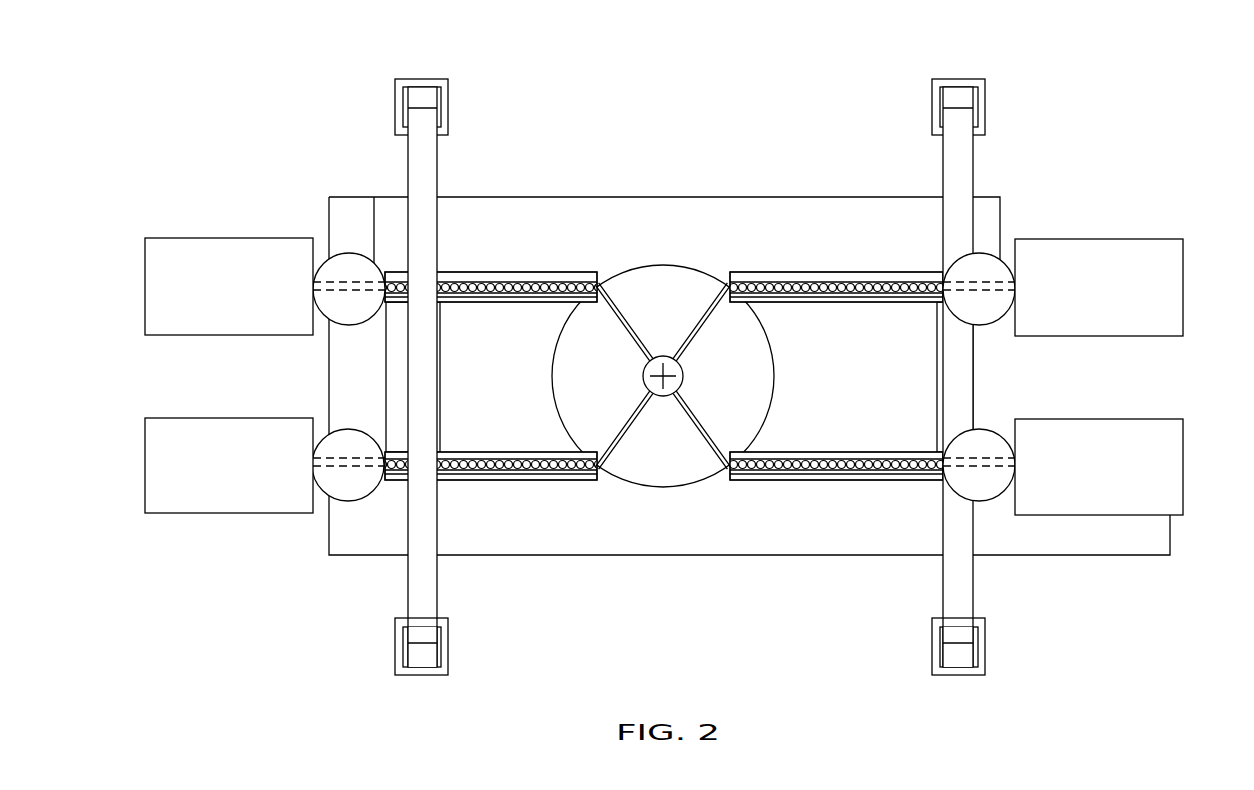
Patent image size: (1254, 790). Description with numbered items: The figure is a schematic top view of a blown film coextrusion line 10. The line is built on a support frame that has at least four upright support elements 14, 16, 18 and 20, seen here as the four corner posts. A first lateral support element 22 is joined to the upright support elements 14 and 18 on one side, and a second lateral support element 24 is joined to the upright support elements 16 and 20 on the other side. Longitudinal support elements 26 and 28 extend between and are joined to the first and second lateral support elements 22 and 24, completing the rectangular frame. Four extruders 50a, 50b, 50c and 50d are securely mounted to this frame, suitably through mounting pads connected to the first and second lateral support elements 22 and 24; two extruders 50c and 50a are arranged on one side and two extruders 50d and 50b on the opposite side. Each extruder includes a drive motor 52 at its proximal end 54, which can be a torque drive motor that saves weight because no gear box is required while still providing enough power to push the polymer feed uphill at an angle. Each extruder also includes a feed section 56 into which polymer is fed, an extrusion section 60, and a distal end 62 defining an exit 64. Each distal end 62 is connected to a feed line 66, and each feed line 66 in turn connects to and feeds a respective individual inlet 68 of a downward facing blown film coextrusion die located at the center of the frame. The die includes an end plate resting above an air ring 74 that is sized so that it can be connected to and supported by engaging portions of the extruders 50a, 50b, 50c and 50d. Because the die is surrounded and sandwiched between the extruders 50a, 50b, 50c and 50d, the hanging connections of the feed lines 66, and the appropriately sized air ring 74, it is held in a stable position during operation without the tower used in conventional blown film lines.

The blown film coextrusion line 10 is at (1036, 148).
The upright support element 14 is at (423, 654).
The upright support element 16 is at (955, 654).
The upright support element 18 is at (423, 97).
The upright support element 20 is at (958, 97).
The first lateral support element 22 is at (420, 378).
The second lateral support element 24 is at (958, 363).
The longitudinal support element 26 is at (826, 232).
The longitudinal support element 28 is at (492, 527).
The extruder 50a is at (183, 513).
The extruder 50b is at (1153, 515).
The extruder 50c is at (200, 238).
The extruder 50d is at (1140, 238).
The drive motor 52 is at (168, 272).
The proximal end 54 is at (193, 425).
The feed section 56 is at (348, 282).
The extrusion section 60 is at (508, 278).
The distal end 62 is at (600, 278).
The exit 64 is at (722, 280).
The feed line 66 is at (623, 324).
The inlet 68 is at (666, 397).
The air ring 74 is at (775, 356).